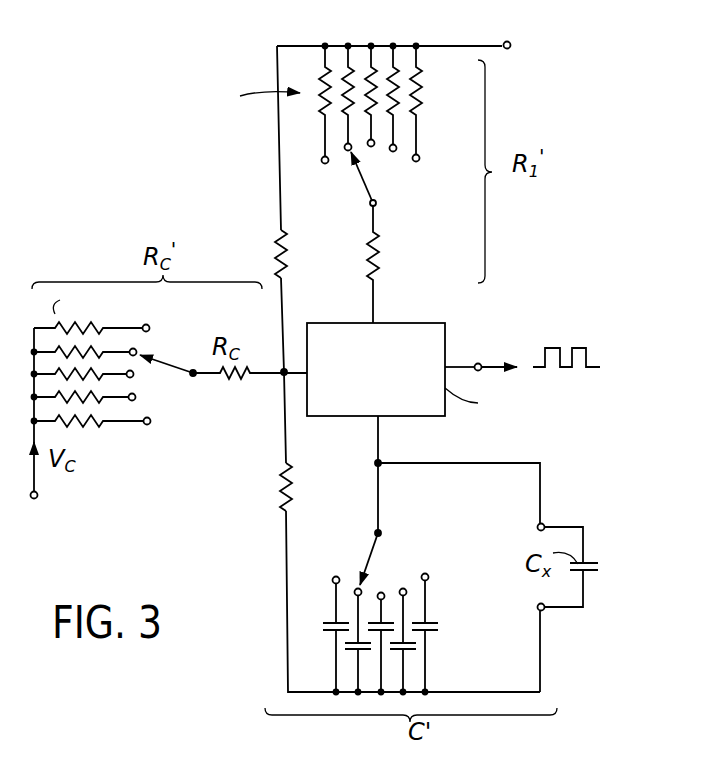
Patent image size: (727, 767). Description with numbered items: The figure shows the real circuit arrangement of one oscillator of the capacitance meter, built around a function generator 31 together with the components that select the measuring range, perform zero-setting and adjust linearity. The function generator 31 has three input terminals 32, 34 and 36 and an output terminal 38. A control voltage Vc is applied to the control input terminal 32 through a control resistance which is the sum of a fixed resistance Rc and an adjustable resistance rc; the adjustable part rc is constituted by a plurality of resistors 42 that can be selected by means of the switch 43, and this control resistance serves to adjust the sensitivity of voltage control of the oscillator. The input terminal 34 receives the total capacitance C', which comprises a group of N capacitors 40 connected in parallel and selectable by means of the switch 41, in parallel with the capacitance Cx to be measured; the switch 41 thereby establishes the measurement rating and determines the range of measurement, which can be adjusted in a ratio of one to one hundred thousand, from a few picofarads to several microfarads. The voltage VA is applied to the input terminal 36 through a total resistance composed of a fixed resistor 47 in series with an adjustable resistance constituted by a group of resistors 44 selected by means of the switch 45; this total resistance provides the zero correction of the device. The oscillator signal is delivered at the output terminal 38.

The function generator 31 is at (390, 382).
The control input terminal 32 is at (38, 495).
The input terminal 34 is at (377, 462).
The input terminal 36 is at (506, 50).
The output terminal 38 is at (478, 363).
The capacitors 40 is at (412, 643).
The switch 41 is at (380, 534).
The resistors 42 is at (95, 399).
The switch 43 is at (193, 376).
The resistors 44 is at (395, 104).
The switch 45 is at (378, 204).
The fixed resistor 47 is at (372, 252).